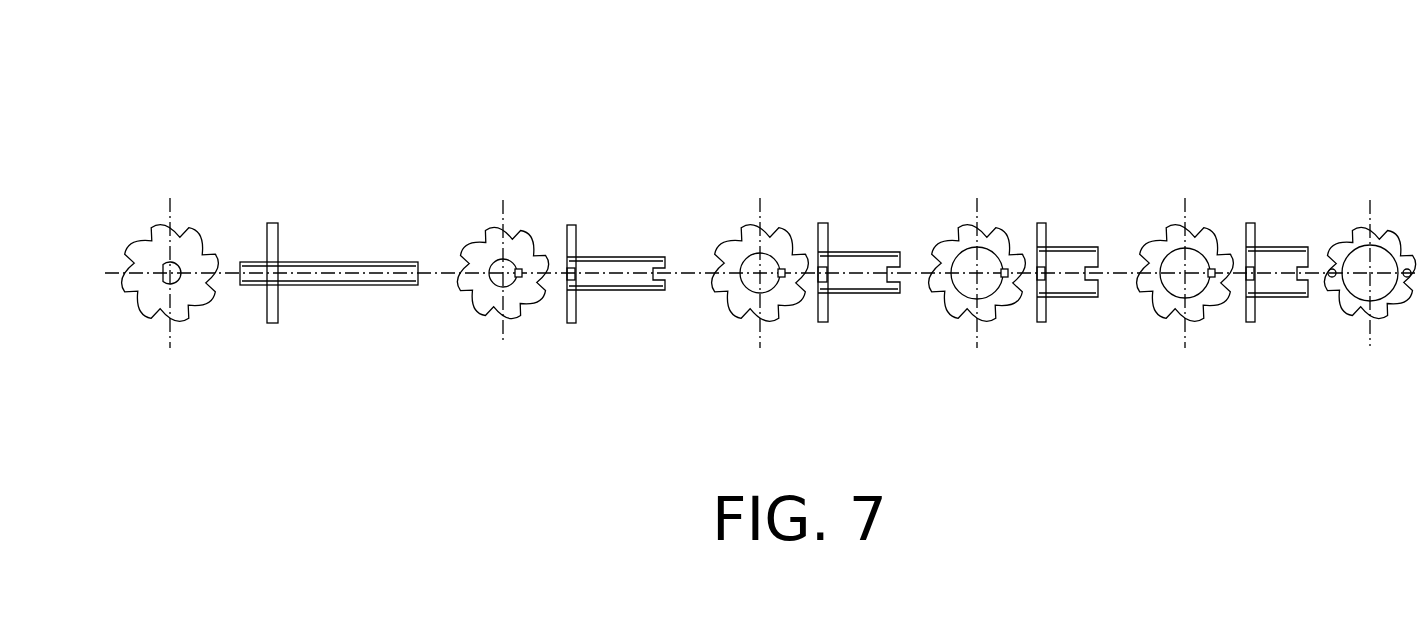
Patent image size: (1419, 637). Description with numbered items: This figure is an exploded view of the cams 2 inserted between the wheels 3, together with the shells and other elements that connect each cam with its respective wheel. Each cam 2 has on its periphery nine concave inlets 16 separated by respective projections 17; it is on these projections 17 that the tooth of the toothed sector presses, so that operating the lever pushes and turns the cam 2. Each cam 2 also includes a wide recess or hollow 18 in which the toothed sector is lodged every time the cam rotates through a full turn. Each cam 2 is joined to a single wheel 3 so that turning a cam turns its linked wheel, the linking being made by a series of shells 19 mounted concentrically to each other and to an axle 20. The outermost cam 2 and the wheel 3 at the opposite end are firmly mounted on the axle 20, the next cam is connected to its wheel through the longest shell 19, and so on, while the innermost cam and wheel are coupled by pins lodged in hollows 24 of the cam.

The cam 2 is at (147, 297).
The wheel 3 is at (273, 230).
The concave inlet 16 is at (128, 253).
The projection 17 is at (210, 248).
The recess or hollow 18 is at (192, 305).
The shell 19 is at (633, 263).
The axle 20 is at (358, 270).
The hollow 24 is at (1332, 263).